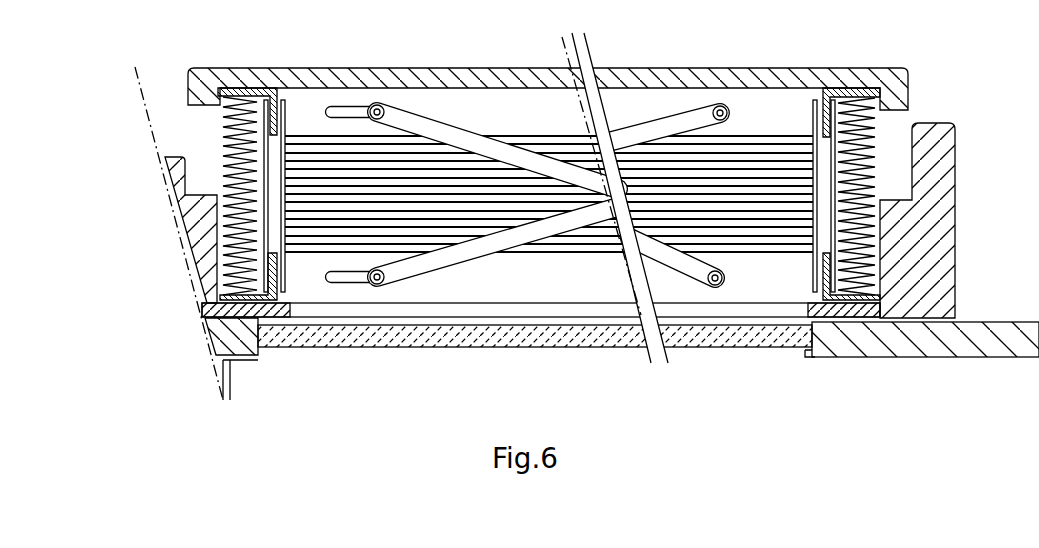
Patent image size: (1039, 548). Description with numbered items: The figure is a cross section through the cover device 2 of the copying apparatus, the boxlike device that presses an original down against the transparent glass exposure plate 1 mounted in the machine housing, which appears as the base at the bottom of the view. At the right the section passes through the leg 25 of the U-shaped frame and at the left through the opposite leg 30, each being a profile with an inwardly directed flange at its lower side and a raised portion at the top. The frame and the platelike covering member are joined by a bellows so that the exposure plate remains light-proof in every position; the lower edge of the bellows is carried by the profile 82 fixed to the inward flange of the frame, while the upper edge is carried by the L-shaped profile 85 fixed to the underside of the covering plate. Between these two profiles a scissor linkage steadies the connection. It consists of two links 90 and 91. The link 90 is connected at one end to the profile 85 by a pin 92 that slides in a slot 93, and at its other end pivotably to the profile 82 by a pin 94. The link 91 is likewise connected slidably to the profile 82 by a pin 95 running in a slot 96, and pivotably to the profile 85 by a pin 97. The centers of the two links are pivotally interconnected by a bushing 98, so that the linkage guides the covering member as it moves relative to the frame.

The glass exposure plate 1 is at (530, 340).
The cover device 2 is at (693, 55).
The leg 25 is at (940, 213).
The leg 30 is at (178, 211).
The profile 82 is at (566, 294).
The L-shaped profile 85 is at (550, 122).
The link 90 is at (468, 135).
The link 91 is at (650, 128).
The pin 92 is at (381, 106).
The slot 93 is at (345, 107).
The pin 94 is at (712, 285).
The pin 95 is at (379, 284).
The slot 96 is at (347, 285).
The pin 97 is at (724, 107).
The bushing 98 is at (273, 187).